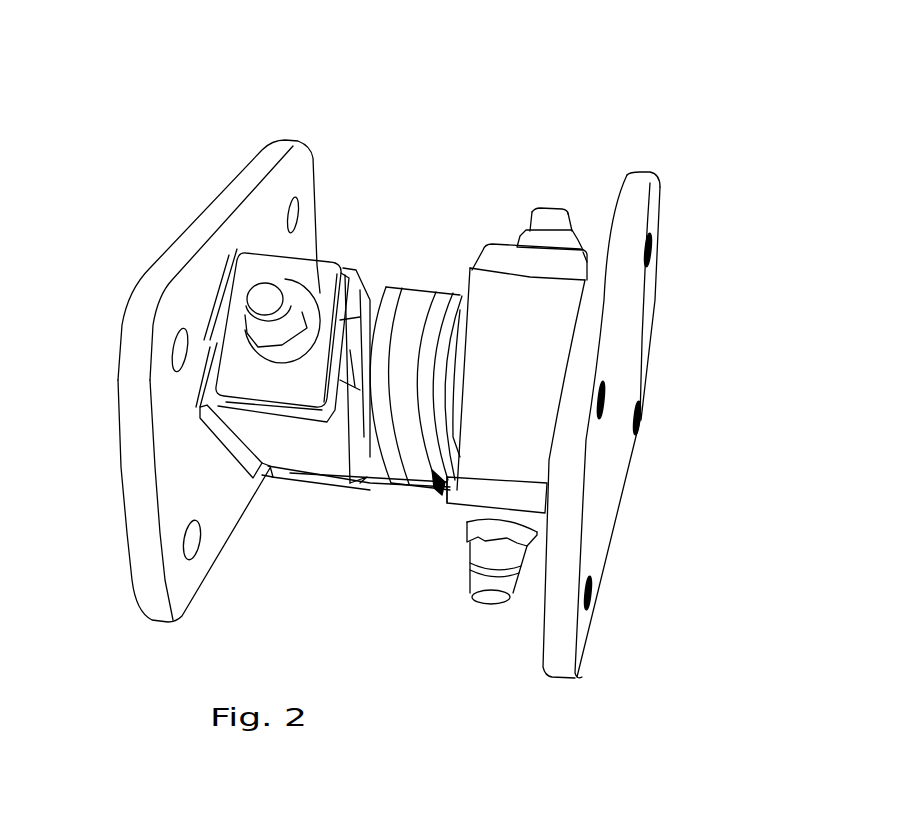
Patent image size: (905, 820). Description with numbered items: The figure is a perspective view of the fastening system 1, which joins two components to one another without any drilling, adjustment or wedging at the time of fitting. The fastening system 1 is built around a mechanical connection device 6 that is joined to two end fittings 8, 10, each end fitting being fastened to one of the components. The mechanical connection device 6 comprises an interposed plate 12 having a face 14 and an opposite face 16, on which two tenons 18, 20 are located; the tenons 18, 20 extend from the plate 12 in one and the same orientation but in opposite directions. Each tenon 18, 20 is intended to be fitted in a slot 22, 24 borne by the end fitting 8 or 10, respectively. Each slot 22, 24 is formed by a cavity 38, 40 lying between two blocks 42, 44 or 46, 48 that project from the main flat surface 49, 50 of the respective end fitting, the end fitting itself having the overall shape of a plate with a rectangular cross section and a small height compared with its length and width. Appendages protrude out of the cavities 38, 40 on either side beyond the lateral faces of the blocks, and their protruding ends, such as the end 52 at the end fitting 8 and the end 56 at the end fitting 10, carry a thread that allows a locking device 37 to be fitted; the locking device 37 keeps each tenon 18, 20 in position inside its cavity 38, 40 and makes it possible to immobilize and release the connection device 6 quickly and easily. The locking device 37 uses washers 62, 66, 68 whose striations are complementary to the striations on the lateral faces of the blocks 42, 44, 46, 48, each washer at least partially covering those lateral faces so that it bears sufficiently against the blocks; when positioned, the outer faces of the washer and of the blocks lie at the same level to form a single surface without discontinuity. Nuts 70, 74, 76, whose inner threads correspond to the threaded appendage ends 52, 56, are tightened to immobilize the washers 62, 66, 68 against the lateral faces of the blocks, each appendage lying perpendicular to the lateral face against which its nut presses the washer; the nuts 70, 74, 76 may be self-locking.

The fastening system 1 is at (642, 70).
The mechanical connection device 6 is at (427, 265).
The end fitting 8 is at (148, 288).
The end fitting 10 is at (627, 307).
The interposed plate 12 is at (392, 290).
The face 14 is at (382, 285).
The opposite face 16 is at (437, 365).
The tenon 18 is at (360, 380).
The tenon 20 is at (463, 497).
The slot 22 is at (227, 410).
The slot 24 is at (450, 497).
The locking device 37 is at (580, 248).
The cavity 38 is at (213, 324).
The cavity 40 is at (440, 486).
The block 42 is at (290, 437).
The block 44 is at (317, 257).
The block 46 is at (507, 340).
The block 48 is at (529, 551).
The main flat surface 49 is at (180, 420).
The main flat surface 50 is at (607, 503).
The appendage end 52 is at (259, 378).
The appendage end 56 is at (534, 207).
The washer 62 is at (213, 295).
The washer 66 is at (556, 232).
The washer 68 is at (456, 528).
The nut 70 is at (267, 300).
The nut 74 is at (588, 240).
The nut 76 is at (493, 548).